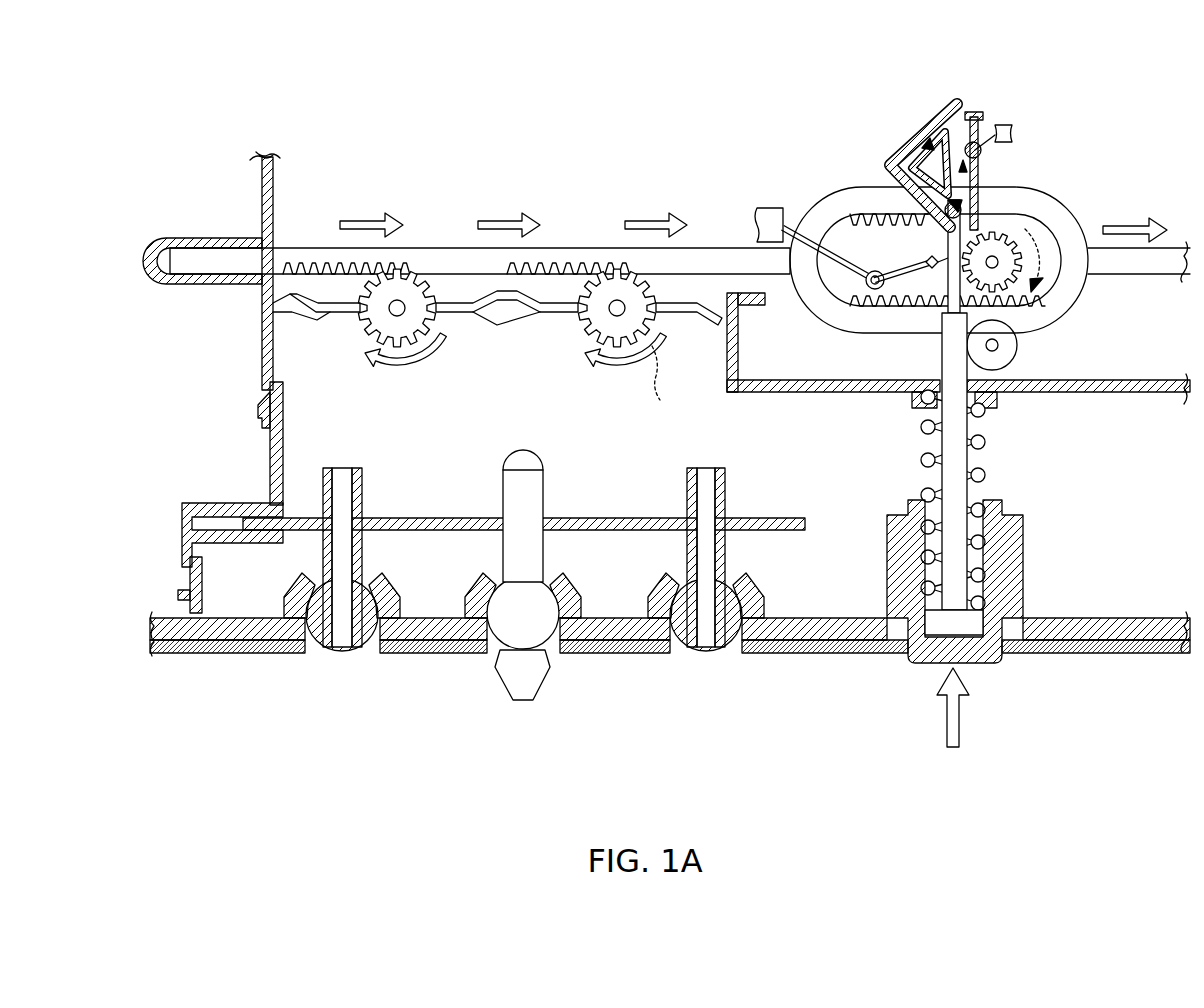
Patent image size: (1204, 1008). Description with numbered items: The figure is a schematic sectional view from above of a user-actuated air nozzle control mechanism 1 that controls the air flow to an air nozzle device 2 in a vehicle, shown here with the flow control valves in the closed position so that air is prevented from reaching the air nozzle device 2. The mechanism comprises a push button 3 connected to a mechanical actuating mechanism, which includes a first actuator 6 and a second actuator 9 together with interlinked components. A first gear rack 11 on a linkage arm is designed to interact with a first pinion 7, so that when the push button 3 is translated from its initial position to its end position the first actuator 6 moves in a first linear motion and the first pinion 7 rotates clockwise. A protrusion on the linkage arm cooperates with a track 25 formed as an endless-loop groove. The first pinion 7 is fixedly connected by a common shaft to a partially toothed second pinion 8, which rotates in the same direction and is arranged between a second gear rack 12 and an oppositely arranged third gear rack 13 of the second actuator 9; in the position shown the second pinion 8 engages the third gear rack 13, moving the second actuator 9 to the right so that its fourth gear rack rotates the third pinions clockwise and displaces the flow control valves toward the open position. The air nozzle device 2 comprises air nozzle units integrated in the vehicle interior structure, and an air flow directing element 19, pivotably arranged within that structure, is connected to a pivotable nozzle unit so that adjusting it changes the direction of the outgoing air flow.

The user-actuated air nozzle control mechanism 1 is at (1068, 112).
The air nozzle device 2 is at (280, 692).
The push button 3 is at (937, 665).
The first actuator 6 is at (960, 490).
The first pinion 7 is at (1010, 262).
The second pinion 8 is at (990, 240).
The second actuator 9 is at (465, 262).
The first gear rack 11 is at (945, 285).
The second gear rack 12 is at (855, 307).
The third gear rack 13 is at (848, 215).
The air flow directing element 19 is at (525, 675).
The track 25 is at (940, 105).